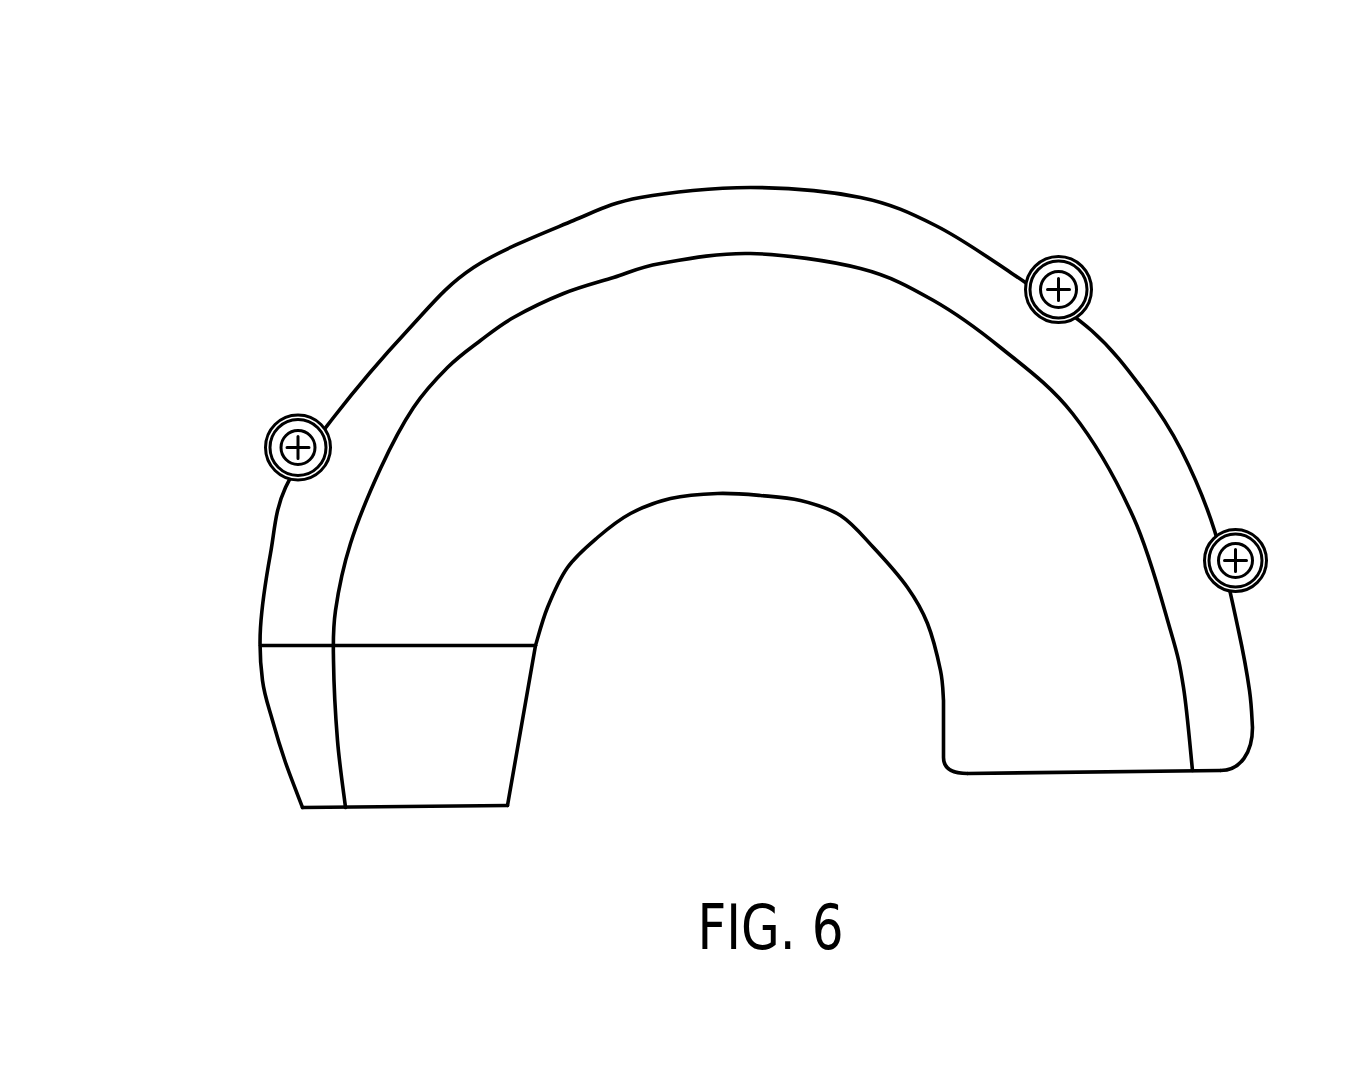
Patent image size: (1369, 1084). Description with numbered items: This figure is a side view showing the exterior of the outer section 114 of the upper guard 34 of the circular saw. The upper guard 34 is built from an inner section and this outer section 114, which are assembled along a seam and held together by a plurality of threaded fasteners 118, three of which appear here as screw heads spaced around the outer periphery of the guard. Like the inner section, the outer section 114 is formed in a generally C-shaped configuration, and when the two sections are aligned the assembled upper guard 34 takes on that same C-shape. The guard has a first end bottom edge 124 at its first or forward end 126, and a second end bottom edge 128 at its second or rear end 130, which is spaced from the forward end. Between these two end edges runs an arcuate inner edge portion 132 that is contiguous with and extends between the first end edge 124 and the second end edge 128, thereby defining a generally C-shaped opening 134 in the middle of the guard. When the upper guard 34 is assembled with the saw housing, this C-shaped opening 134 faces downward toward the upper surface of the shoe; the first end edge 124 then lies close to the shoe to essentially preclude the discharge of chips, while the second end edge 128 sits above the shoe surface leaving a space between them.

The upper guard 34 is at (461, 192).
The outer section 114 is at (982, 226).
The threaded fasteners 118 is at (1078, 279).
The first end bottom edge 124 is at (460, 807).
The first or forward end 126 is at (297, 712).
The second end bottom edge 128 is at (1167, 773).
The second or rear end 130 is at (1130, 687).
The arcuate inner edge portion 132 is at (713, 493).
The C-shaped opening 134 is at (683, 563).